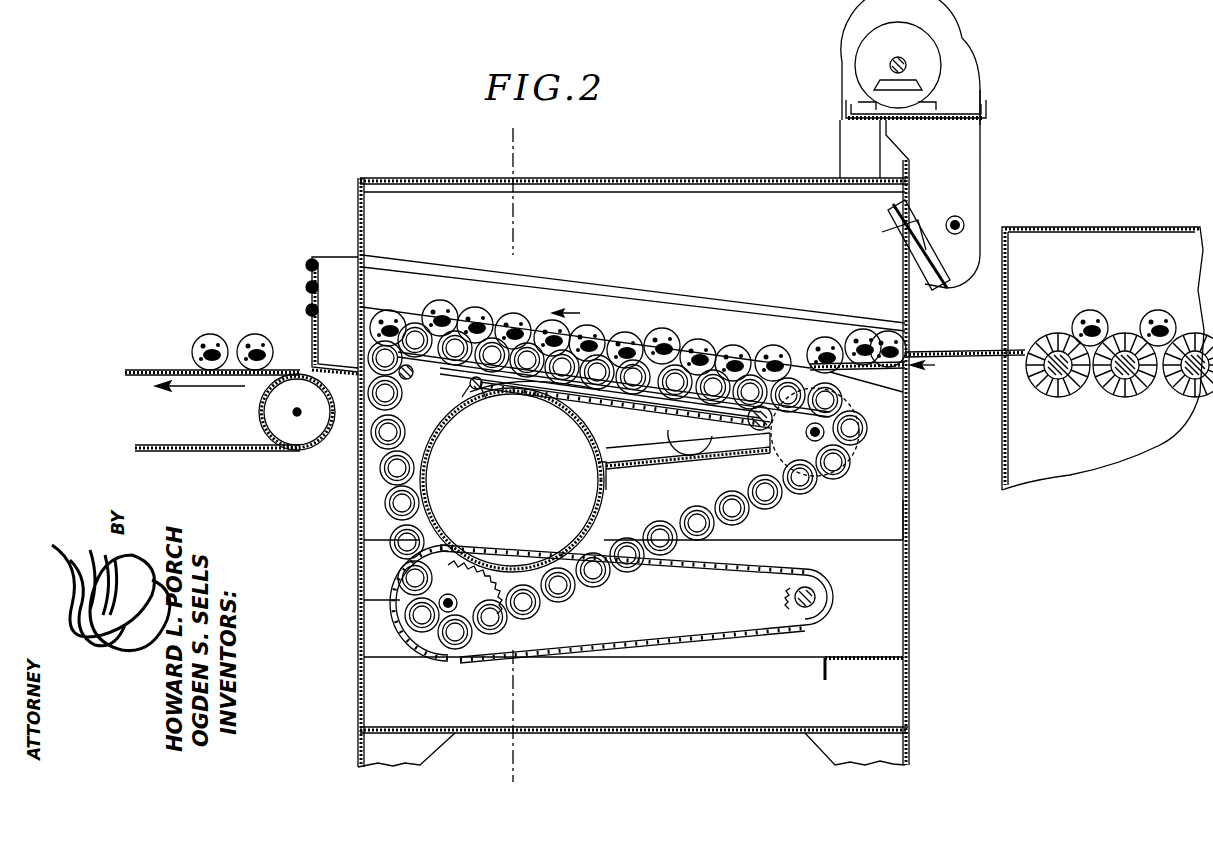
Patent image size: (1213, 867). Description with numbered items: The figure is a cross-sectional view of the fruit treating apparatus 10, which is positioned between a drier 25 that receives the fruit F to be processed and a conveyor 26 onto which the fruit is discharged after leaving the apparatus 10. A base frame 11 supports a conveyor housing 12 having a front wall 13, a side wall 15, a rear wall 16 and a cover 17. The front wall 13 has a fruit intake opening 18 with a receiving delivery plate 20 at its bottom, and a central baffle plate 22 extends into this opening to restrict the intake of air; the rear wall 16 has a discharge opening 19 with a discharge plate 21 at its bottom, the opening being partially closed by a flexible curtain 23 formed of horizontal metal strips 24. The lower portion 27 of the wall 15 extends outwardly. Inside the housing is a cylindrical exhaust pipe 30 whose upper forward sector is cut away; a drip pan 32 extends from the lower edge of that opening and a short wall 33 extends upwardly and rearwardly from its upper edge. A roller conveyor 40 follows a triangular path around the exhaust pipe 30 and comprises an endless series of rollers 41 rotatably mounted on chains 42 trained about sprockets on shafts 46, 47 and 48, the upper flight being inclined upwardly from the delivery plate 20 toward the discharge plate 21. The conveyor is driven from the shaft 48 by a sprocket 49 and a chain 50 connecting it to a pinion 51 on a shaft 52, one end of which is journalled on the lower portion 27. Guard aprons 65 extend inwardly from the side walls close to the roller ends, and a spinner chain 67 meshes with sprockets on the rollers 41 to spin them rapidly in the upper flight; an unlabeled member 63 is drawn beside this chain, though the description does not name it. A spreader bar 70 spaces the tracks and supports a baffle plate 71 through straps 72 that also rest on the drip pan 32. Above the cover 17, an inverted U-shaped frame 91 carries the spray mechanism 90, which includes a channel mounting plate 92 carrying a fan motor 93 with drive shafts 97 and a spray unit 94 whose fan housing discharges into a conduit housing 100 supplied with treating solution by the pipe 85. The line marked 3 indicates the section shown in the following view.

The apparatus 10 is at (392, 160).
The base frame 11 is at (910, 700).
The conveyor housing 12 is at (912, 519).
The front wall 13 is at (909, 481).
The side wall 15 is at (842, 293).
The rear wall 16 is at (358, 493).
The cover 17 is at (620, 180).
The fruit intake opening 18 is at (898, 315).
The discharge opening 19 is at (344, 270).
The receiving delivery plate 20 is at (882, 378).
The discharge plate 21 is at (347, 364).
The central baffle plate 22 is at (948, 280).
The flexible curtain 23 is at (306, 292).
The horizontal metal strips 24 is at (306, 272).
The drier 25 is at (1096, 238).
The conveyor 26 is at (150, 372).
The lower portion of housing wall 27 is at (883, 572).
The cylindrical exhaust pipe 30 is at (602, 516).
The drip pan 32 is at (680, 462).
The short wall 33 is at (412, 380).
The roller conveyor 40 is at (870, 436).
The rollers 41 is at (690, 512).
The chains 42 is at (750, 510).
The shaft 46 is at (404, 376).
The shaft 47 is at (807, 436).
The shaft 48 is at (395, 600).
The sprocket 49 is at (486, 578).
The chain 50 is at (656, 629).
The pinion 51 is at (788, 597).
The shaft 52 is at (816, 594).
The guide bar 63 is at (634, 400).
The guard aprons 65 is at (650, 304).
The spinner chain 67 is at (575, 392).
The spreader bar 70 is at (474, 390).
The baffle plate 71 is at (598, 445).
The straps 72 is at (515, 390).
The pipe 85 is at (966, 222).
The spray mechanism 90 is at (985, 56).
The inverted U-shaped frame 91 is at (845, 148).
The channel mounting plate 92 is at (845, 104).
The fan motor 93 is at (860, 52).
The spray unit 94 is at (962, 86).
The drive shafts 97 is at (906, 62).
The conduit housing 100 is at (975, 157).
The fruit F is at (1094, 317).
The section line 3 is at (508, 147).